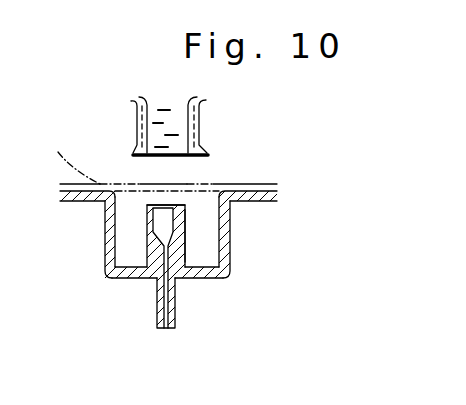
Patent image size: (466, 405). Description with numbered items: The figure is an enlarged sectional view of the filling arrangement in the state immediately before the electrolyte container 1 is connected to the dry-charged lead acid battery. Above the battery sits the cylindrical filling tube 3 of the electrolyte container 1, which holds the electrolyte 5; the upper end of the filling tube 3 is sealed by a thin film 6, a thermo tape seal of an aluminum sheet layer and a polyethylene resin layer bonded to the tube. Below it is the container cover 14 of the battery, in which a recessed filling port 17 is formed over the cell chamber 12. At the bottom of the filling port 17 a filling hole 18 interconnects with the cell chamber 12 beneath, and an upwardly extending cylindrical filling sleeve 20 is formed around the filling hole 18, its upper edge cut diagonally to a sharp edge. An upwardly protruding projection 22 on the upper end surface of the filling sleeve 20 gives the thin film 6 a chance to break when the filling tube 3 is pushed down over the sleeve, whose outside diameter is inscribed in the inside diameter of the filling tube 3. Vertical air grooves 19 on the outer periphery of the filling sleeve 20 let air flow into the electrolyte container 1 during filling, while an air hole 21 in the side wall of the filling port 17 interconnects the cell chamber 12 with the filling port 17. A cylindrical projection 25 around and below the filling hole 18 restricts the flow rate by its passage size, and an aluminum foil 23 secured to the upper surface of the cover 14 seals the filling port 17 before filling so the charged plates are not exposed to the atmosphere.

The electrolyte container 1 is at (138, 106).
The filling tube 3 is at (193, 117).
The electrolyte 5 is at (170, 108).
The thin film 6 is at (183, 158).
The cell chamber 12 is at (174, 373).
The container cover 14 is at (90, 196).
The filling port 17 is at (206, 206).
The filling hole 18 is at (172, 296).
The air groove 19 is at (182, 236).
The filling sleeve 20 is at (148, 271).
The air hole 21 is at (105, 247).
The projection 22 is at (168, 204).
The aluminum foil 23 is at (124, 162).
The cylindrical projection 25 is at (158, 302).